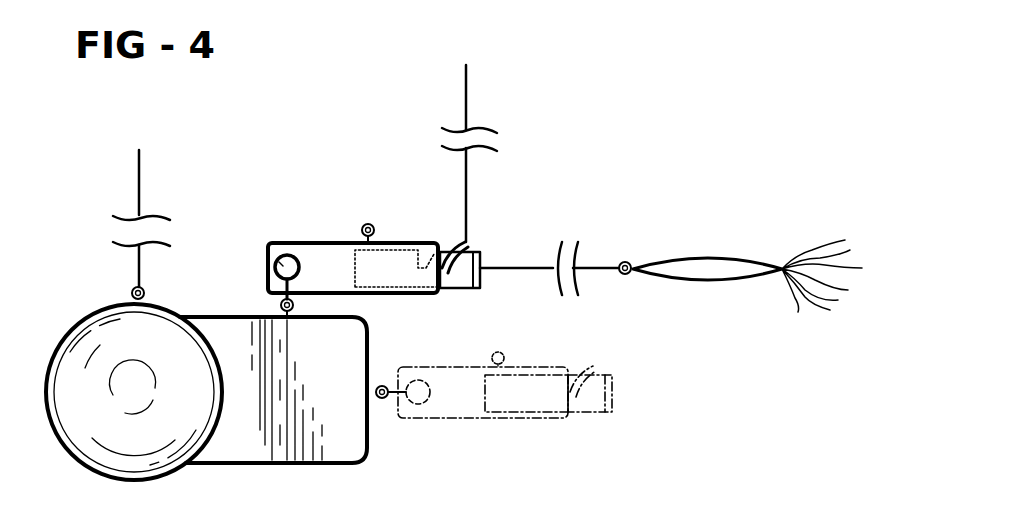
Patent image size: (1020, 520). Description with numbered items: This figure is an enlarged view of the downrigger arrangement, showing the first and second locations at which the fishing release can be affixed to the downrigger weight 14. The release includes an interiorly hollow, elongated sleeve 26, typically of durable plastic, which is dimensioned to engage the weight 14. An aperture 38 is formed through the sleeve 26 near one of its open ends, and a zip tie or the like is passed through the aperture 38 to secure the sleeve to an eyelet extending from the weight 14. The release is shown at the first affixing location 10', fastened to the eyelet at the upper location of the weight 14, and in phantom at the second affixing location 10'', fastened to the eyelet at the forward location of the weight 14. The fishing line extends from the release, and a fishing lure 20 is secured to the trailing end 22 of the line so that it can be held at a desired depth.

The weight 14 is at (56, 348).
The sleeve 26 is at (337, 252).
The aperture 38 is at (279, 257).
The fishing release apparatus (first affixing location) 10' is at (392, 176).
The trailing end of the fishing line 22 is at (522, 262).
The fishing lure 20 is at (703, 253).
The fishing release apparatus (second affixing location) 10'' is at (494, 420).